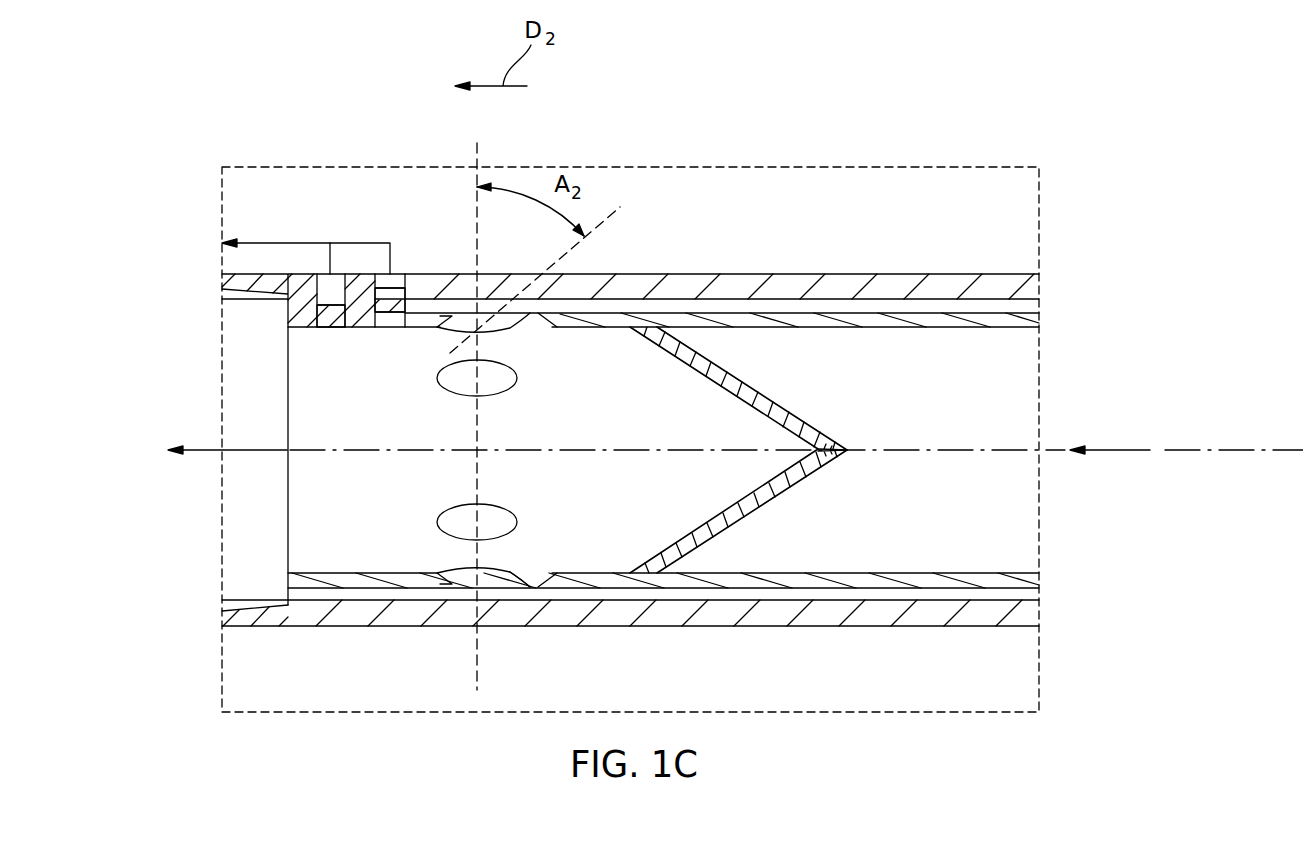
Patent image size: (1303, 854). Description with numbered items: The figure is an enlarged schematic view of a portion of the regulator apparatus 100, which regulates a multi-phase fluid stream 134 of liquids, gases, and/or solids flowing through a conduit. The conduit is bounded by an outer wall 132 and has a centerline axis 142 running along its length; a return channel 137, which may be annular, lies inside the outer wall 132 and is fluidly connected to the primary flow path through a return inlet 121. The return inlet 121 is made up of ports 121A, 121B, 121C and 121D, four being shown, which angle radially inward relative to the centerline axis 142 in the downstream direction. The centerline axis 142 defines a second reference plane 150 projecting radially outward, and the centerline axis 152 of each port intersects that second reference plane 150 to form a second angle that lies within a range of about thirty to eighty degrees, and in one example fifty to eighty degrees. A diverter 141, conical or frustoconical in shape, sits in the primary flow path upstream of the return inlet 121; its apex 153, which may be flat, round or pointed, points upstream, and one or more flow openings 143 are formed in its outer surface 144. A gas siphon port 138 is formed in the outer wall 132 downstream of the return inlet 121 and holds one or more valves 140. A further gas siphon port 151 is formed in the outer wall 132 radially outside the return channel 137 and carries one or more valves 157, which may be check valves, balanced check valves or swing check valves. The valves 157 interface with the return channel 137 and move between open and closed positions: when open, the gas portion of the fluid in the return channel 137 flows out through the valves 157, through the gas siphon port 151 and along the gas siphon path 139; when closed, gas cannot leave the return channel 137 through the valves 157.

The regulator apparatus 100 is at (976, 125).
The return inlet 121 is at (462, 568).
The port 121A is at (512, 578).
The port 121B is at (437, 515).
The port 121C is at (437, 380).
The port 121D is at (462, 323).
The outer wall 132 is at (626, 287).
The fluid stream 134 is at (180, 450).
The return channel 137 is at (715, 307).
The gas siphon port 138 is at (330, 287).
The gas siphon path 139 is at (262, 243).
The valves 140 is at (333, 320).
The diverter 141 is at (815, 483).
The centerline axis 142 is at (1235, 452).
The flow openings 143 is at (722, 375).
The outer surface 144 is at (803, 421).
The second reference plane 150 is at (477, 665).
The gas siphon port 151 is at (397, 282).
The centerline axis 152 is at (600, 222).
The apex 153 is at (848, 451).
The valves 157 is at (388, 310).